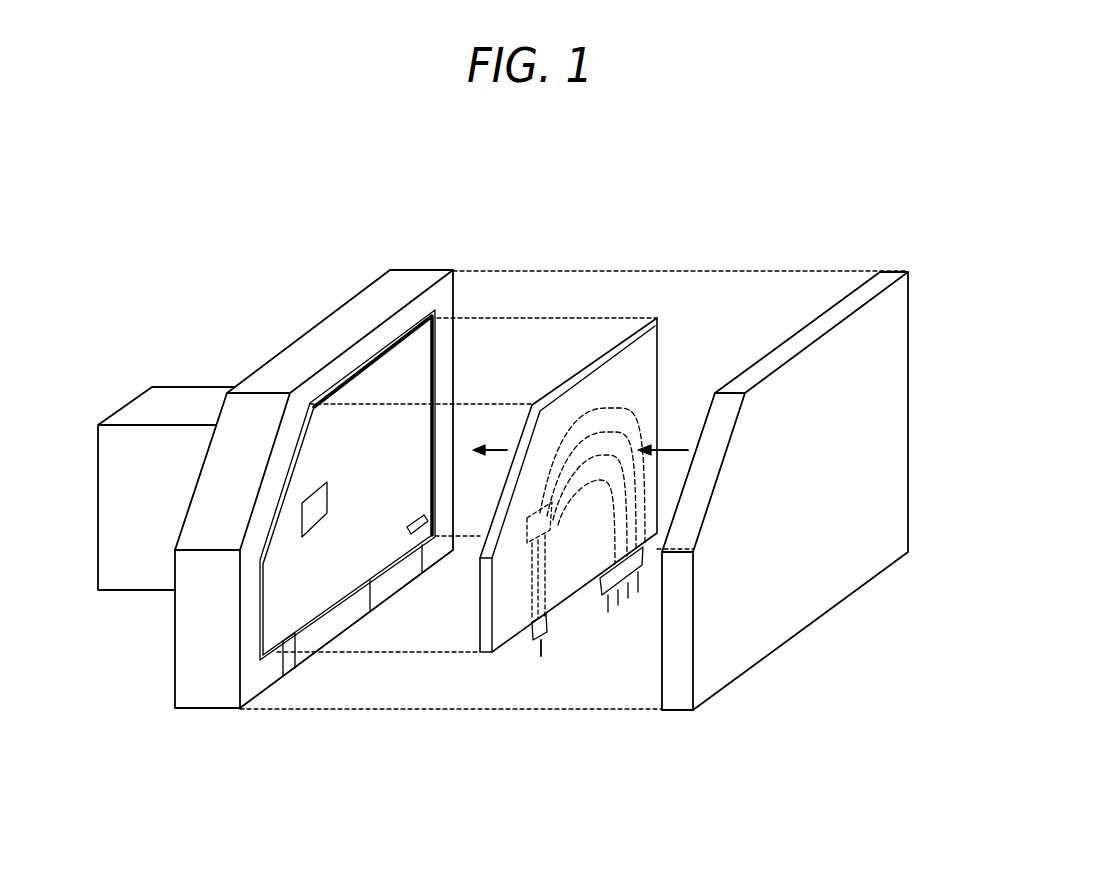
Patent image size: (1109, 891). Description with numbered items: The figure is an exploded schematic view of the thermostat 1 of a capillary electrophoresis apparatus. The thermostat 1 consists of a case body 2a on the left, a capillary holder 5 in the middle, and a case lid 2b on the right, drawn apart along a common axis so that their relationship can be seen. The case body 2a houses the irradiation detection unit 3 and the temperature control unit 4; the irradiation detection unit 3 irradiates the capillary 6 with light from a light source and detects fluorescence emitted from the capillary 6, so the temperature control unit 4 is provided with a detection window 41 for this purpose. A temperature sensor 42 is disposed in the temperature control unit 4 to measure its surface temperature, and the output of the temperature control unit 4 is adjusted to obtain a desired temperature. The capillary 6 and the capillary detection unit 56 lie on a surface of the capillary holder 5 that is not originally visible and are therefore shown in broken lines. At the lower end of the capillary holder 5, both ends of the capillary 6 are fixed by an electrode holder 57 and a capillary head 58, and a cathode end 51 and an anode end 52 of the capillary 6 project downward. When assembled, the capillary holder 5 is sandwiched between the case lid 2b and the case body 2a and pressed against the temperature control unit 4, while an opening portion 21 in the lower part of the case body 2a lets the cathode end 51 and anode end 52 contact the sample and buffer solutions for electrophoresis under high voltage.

The thermostat 1 is at (886, 191).
The case body 2a is at (323, 321).
The case lid 2b is at (896, 272).
The irradiation detection unit 3 is at (168, 386).
The temperature control unit 4 is at (431, 348).
The detection window 41 is at (312, 537).
The temperature sensor 42 is at (416, 532).
The opening portion 21 is at (298, 640).
The capillary holder 5 is at (655, 322).
The cathode end 51 is at (616, 600).
The anode end 52 is at (541, 656).
The capillary detection unit 56 is at (528, 542).
The electrode holder 57 is at (600, 597).
The capillary head 58 is at (540, 620).
The capillary 6 is at (642, 407).